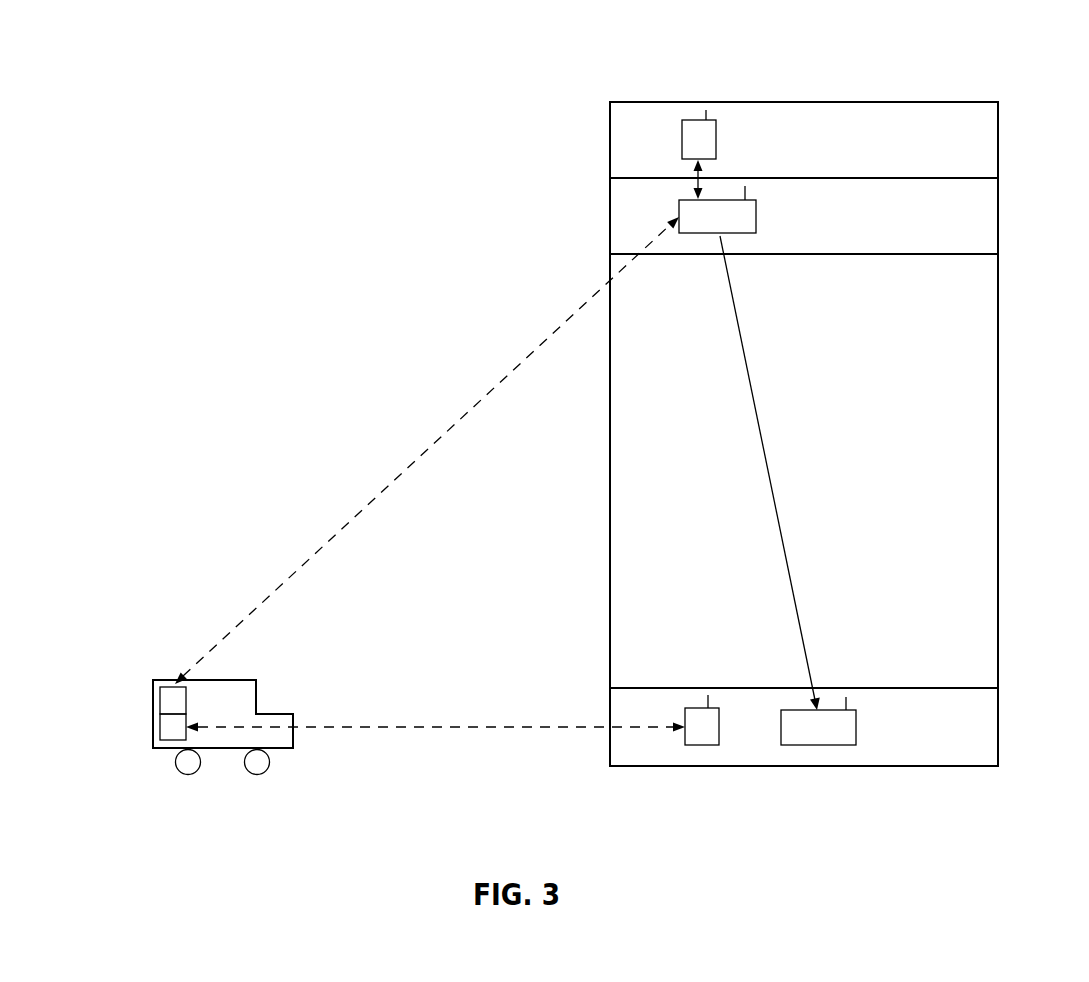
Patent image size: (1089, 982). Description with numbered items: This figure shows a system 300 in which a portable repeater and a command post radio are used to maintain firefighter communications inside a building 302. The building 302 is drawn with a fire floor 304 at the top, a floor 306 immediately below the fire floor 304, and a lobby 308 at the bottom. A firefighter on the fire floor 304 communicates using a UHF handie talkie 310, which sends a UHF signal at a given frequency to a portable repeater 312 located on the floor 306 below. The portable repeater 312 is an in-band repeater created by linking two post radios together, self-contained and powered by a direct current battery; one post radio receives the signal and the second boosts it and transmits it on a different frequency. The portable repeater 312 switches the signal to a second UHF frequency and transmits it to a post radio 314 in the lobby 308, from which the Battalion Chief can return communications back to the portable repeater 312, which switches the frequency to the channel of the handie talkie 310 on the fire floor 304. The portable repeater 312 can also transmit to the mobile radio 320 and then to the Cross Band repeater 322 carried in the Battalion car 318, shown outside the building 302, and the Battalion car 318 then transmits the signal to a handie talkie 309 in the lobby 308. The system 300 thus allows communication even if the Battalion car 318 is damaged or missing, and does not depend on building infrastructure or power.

The system 300 is at (568, 48).
The building 302 is at (998, 462).
The fire floor 304 is at (902, 102).
The floor 306 is at (902, 254).
The lobby 308 is at (903, 688).
The handie talkie 309 is at (702, 746).
The handie talkie 310 is at (695, 118).
The portable repeater 312 is at (740, 233).
The post radio 314 is at (817, 746).
The Battalion car 318 is at (225, 680).
The mobile radio 320 is at (160, 700).
The Cross Band repeater 322 is at (173, 743).